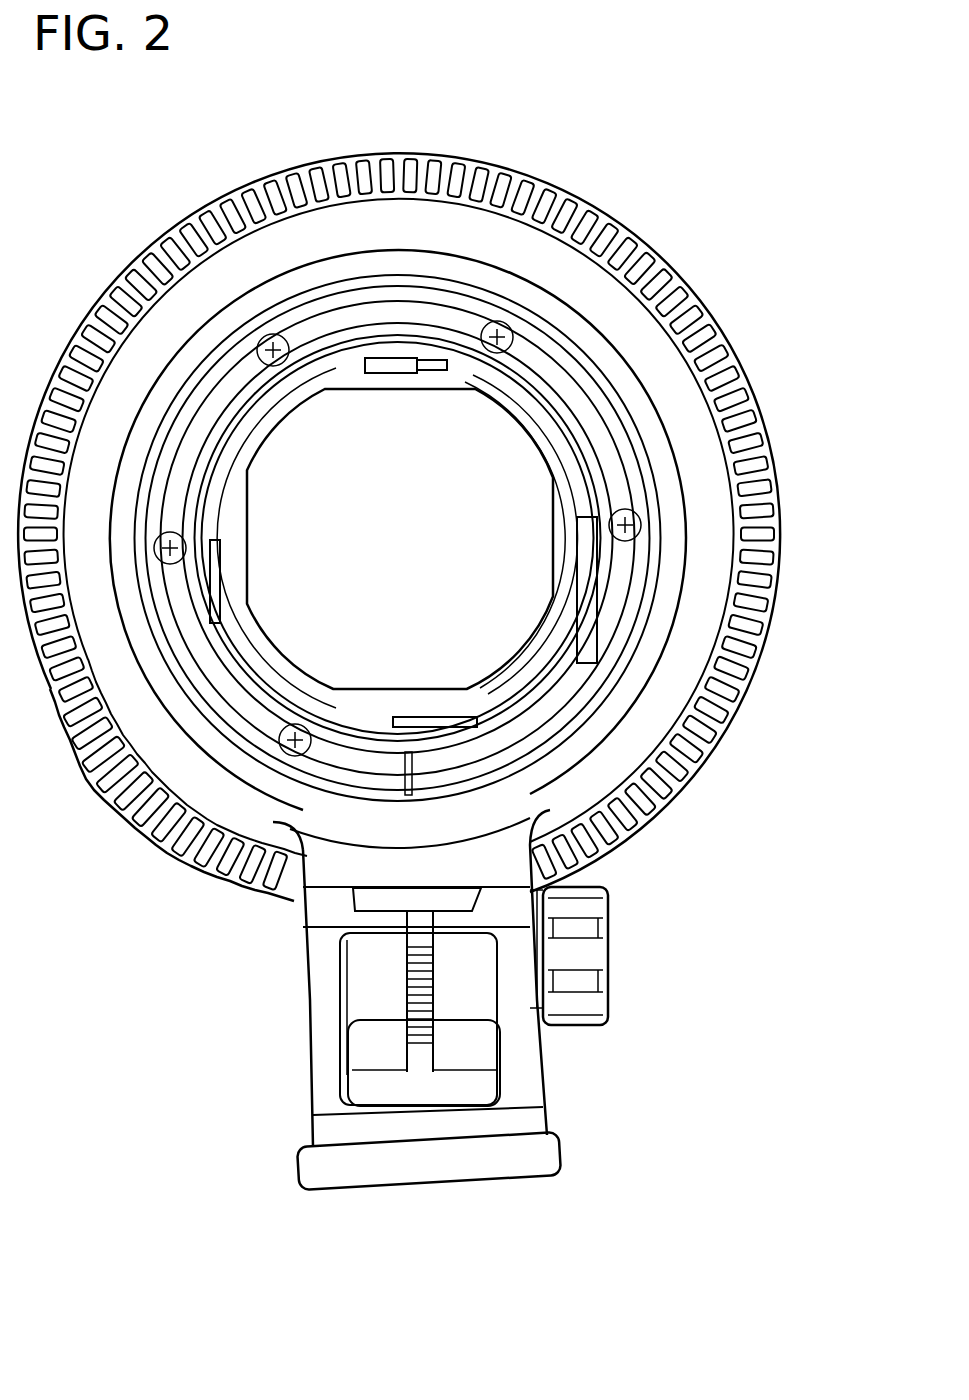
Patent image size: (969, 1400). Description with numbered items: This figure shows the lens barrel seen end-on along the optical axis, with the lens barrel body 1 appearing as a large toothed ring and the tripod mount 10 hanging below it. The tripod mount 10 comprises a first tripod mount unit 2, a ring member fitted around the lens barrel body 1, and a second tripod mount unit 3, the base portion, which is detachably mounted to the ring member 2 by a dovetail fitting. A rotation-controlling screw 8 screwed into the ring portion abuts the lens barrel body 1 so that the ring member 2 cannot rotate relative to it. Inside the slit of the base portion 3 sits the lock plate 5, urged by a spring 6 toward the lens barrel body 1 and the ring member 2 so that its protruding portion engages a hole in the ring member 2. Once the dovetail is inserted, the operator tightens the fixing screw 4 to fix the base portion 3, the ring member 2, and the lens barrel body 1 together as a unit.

The lens barrel body 1 is at (514, 190).
The first tripod mount unit 2 is at (328, 858).
The second tripod mount unit 3 is at (357, 1168).
The fixing screw 4 is at (578, 953).
The lock plate 5 is at (397, 977).
The spring 6 is at (432, 1043).
The rotation-controlling screw 8 is at (147, 822).
The tripod mount 10 is at (573, 1068).